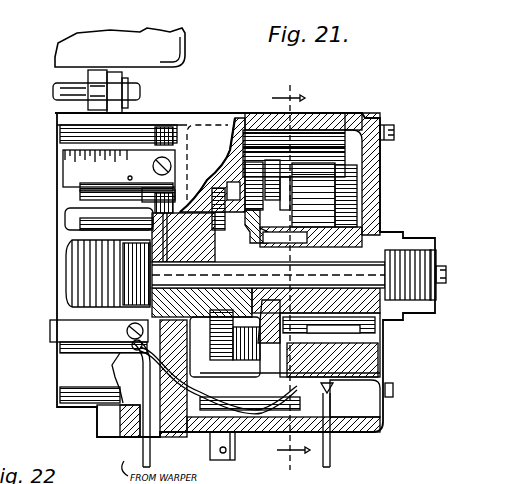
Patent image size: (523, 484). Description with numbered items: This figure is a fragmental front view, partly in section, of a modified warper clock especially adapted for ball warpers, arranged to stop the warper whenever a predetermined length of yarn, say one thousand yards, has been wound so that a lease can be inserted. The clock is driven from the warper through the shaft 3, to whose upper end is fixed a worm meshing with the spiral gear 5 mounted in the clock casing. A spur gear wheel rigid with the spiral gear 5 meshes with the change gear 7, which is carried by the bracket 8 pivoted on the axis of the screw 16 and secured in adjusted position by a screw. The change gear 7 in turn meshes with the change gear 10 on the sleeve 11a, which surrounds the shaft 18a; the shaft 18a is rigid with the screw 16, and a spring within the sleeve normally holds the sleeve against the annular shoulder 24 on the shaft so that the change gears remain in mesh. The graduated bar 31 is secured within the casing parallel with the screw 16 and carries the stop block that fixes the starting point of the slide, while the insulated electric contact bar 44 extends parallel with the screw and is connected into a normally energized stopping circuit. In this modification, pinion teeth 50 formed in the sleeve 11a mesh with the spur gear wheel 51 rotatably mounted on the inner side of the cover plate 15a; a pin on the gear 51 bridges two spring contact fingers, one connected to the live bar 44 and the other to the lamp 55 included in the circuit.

The shaft 3 is at (236, 455).
The spiral gear 5 is at (213, 185).
The change gear 7 is at (270, 160).
The bracket 8 is at (252, 163).
The change gear 10 is at (282, 360).
The sleeve 11a is at (432, 245).
The cover plate 15a is at (365, 118).
The screw 16 is at (80, 284).
The shaft 18a is at (360, 265).
The annular shoulder 24 is at (290, 272).
The graduated bar 31 is at (73, 172).
The electric contact bar 44 is at (55, 332).
The pinion teeth 50 is at (313, 195).
The spur gear wheel 51 is at (355, 185).
The lamp 55 is at (330, 467).